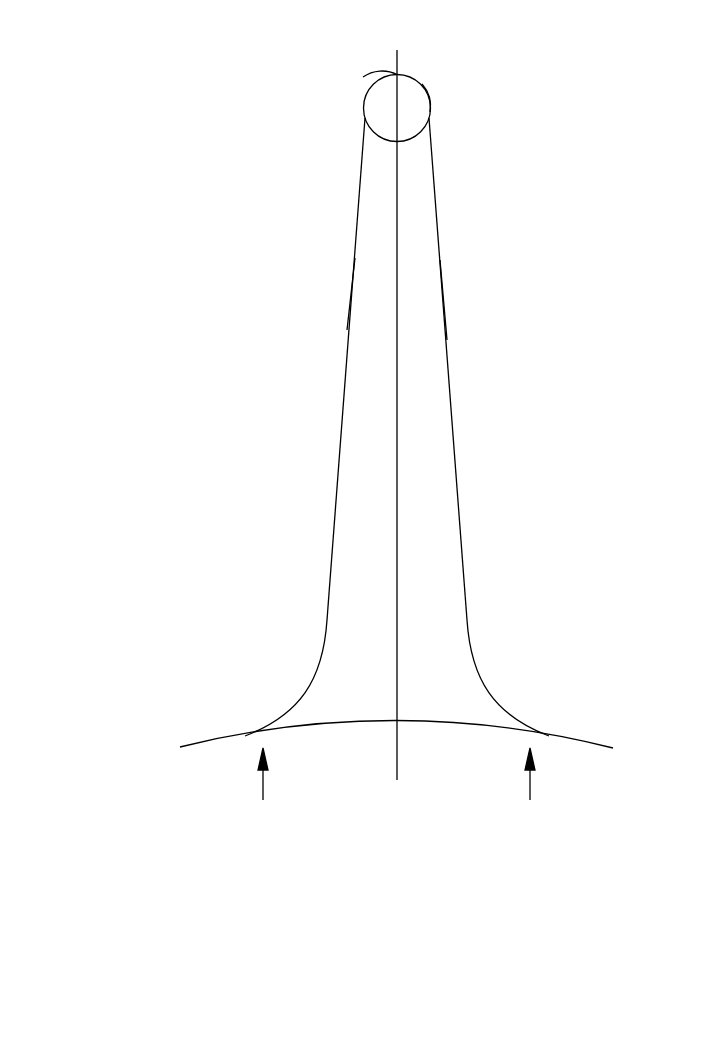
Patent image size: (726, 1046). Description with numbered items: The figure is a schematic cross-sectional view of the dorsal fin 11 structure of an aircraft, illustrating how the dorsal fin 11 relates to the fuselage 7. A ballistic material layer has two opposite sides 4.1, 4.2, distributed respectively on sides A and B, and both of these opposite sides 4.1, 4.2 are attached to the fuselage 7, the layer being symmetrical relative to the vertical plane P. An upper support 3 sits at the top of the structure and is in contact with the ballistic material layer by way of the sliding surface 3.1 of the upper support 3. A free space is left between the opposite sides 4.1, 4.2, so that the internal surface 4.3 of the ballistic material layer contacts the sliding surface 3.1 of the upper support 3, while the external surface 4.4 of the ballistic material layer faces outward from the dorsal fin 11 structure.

The dorsal fin 11 is at (148, 231).
The upper support 3 is at (384, 120).
The sliding surface 3.1 is at (372, 92).
The first opposite side of the ballistic material layer 4.1 is at (268, 428).
The second opposite side of the ballistic material layer 4.2 is at (522, 428).
The internal surface 4.3 is at (350, 330).
The external surface 4.4 is at (313, 680).
The fuselage 7 is at (567, 737).